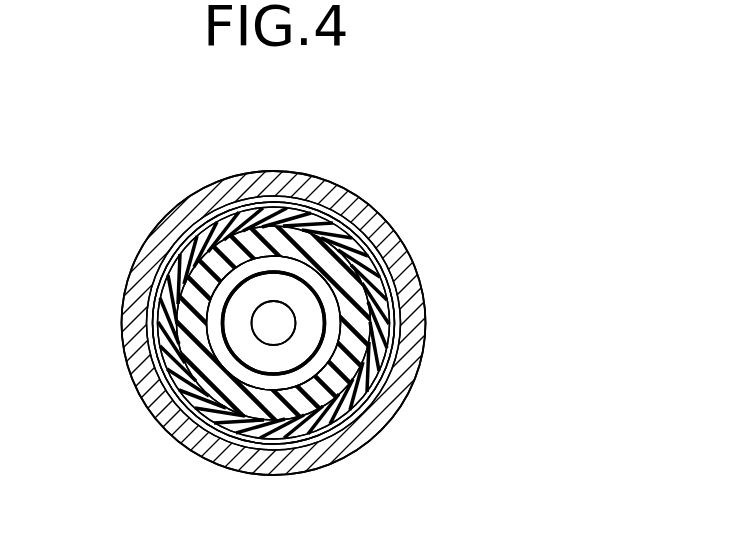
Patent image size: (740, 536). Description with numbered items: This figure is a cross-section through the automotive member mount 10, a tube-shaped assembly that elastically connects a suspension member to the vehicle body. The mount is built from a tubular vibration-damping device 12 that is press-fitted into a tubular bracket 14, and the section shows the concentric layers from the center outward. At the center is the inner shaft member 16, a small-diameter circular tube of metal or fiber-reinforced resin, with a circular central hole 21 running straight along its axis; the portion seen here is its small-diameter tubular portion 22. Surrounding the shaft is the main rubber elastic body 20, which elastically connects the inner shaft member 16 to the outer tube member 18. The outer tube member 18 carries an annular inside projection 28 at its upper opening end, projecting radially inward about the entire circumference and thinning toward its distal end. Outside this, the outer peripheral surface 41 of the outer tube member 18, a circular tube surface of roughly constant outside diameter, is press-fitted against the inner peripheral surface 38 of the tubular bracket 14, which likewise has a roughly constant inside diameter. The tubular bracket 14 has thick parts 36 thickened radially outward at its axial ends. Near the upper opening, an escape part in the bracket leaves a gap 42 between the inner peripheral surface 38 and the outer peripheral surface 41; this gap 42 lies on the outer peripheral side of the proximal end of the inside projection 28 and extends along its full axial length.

The member mount 10 is at (438, 160).
The tubular vibration-damping device 12 is at (356, 218).
The tubular bracket 14 is at (408, 327).
The thick part 36 is at (370, 323).
The inner shaft member 16 is at (244, 272).
The outer tube member 18 is at (190, 373).
The inside projection 28 is at (365, 323).
The main rubber elastic body 20 is at (318, 396).
The central hole 21 is at (270, 335).
The small-diameter tubular portion 22 is at (306, 344).
The inner peripheral surface 38 is at (176, 246).
The outer peripheral surface 41 is at (385, 268).
The gap 42 is at (152, 336).